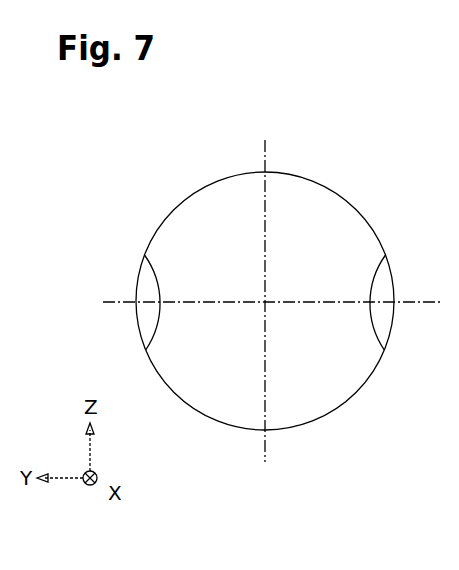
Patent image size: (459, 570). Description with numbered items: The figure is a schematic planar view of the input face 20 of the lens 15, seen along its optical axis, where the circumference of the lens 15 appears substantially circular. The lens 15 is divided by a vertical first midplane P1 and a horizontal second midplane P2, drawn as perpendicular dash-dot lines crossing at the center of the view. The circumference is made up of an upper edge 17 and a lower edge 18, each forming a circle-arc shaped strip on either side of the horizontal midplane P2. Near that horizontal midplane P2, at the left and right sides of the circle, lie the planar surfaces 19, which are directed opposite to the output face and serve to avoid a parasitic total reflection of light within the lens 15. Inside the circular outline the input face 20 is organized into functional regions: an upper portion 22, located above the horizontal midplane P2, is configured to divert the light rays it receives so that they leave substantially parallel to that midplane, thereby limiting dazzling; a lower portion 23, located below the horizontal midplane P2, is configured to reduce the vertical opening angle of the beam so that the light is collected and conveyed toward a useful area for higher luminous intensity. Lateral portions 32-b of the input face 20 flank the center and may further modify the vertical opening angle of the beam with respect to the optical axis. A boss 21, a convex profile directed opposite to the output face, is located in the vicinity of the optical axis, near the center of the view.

The lens 15 is at (162, 158).
The upper edge 17 is at (205, 187).
The lower edge 18 is at (213, 422).
The planar surface 19 is at (150, 324).
The input face 20 is at (339, 199).
The boss 21 is at (305, 310).
The upper portion 22 is at (330, 268).
The lower portion 23 is at (232, 371).
The lateral portions 32-b is at (213, 297).
The vertical first midplane P1 is at (266, 155).
The horizontal second midplane P2 is at (118, 301).